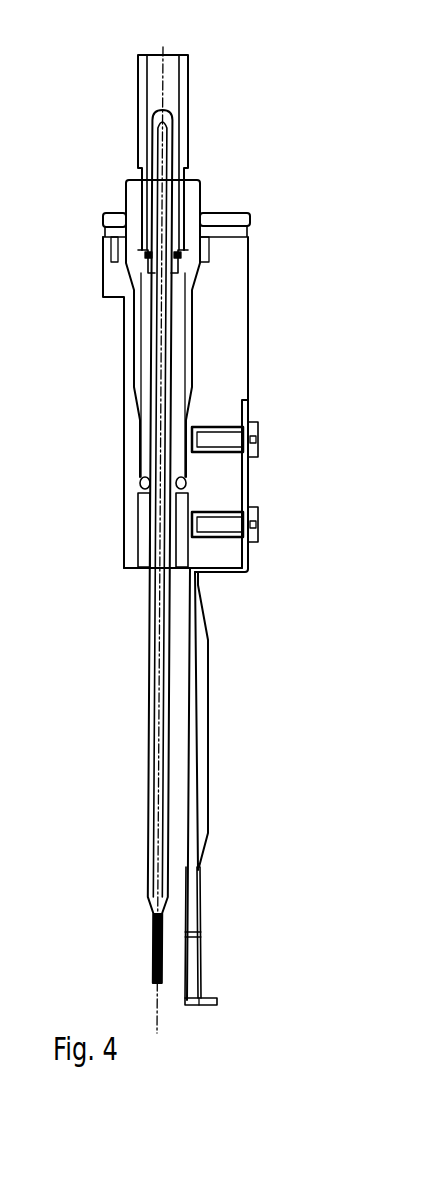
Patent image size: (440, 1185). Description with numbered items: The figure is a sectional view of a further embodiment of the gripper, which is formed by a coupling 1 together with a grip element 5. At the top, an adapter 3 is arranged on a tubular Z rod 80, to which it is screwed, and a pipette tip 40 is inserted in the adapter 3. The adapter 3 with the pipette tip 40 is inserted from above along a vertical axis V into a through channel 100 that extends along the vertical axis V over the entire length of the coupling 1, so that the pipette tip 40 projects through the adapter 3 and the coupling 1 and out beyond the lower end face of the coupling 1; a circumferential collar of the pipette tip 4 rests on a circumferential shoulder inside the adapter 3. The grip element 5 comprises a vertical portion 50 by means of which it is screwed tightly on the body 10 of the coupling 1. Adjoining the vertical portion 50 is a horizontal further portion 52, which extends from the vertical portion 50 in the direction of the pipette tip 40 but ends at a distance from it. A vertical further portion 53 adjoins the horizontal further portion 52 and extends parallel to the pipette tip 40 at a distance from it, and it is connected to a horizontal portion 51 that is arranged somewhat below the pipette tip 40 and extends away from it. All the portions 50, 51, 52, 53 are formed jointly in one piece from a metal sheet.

The coupling 1 is at (276, 273).
The adapter 3 is at (126, 197).
The pipette tip 4 is at (252, 167).
The grip element 5 is at (318, 670).
The body 10 is at (227, 360).
The pipette tip 40 is at (150, 777).
The vertical portion 50 is at (245, 485).
The horizontal portion 51 is at (205, 997).
The horizontal further portion 52 is at (222, 577).
The vertical further portion 53 is at (200, 780).
The tubular Z rod 80 is at (140, 100).
The through channel 100 is at (141, 555).
The vertical axis V is at (162, 38).